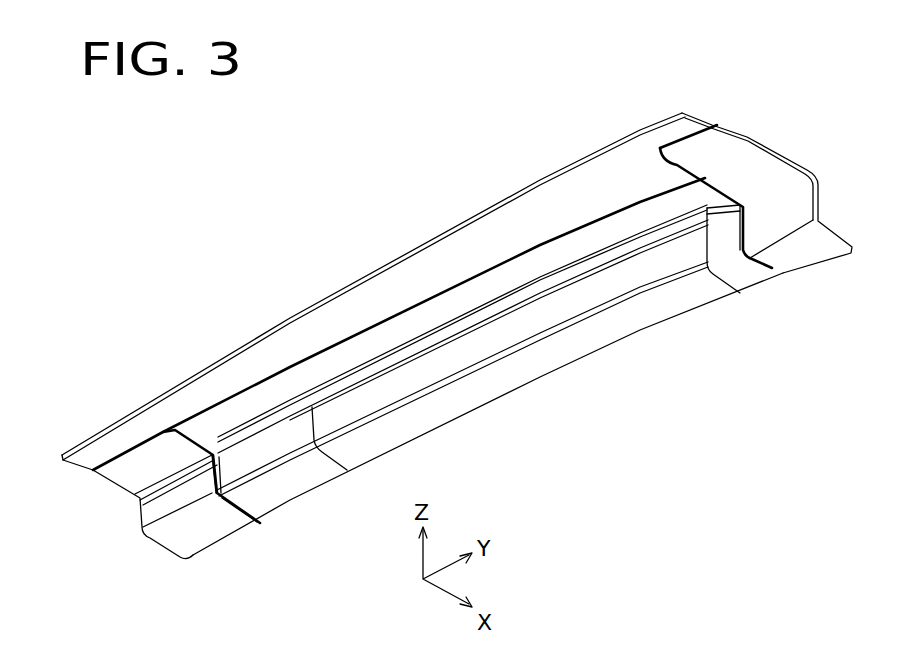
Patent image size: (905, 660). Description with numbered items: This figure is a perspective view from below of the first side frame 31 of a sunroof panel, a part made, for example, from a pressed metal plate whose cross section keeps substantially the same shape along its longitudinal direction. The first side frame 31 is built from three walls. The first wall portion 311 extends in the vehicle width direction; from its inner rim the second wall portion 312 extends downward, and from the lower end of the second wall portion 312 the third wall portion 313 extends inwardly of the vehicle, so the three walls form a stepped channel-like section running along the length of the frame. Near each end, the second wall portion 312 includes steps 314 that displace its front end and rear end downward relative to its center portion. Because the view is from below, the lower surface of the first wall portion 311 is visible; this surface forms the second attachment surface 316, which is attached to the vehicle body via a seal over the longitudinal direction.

The first side frame 31 is at (258, 165).
The first wall portion 311 is at (450, 228).
The second wall portion 312 is at (498, 335).
The third wall portion 313 is at (642, 320).
The steps 314 is at (175, 445).
The second attachment surface 316 is at (287, 350).